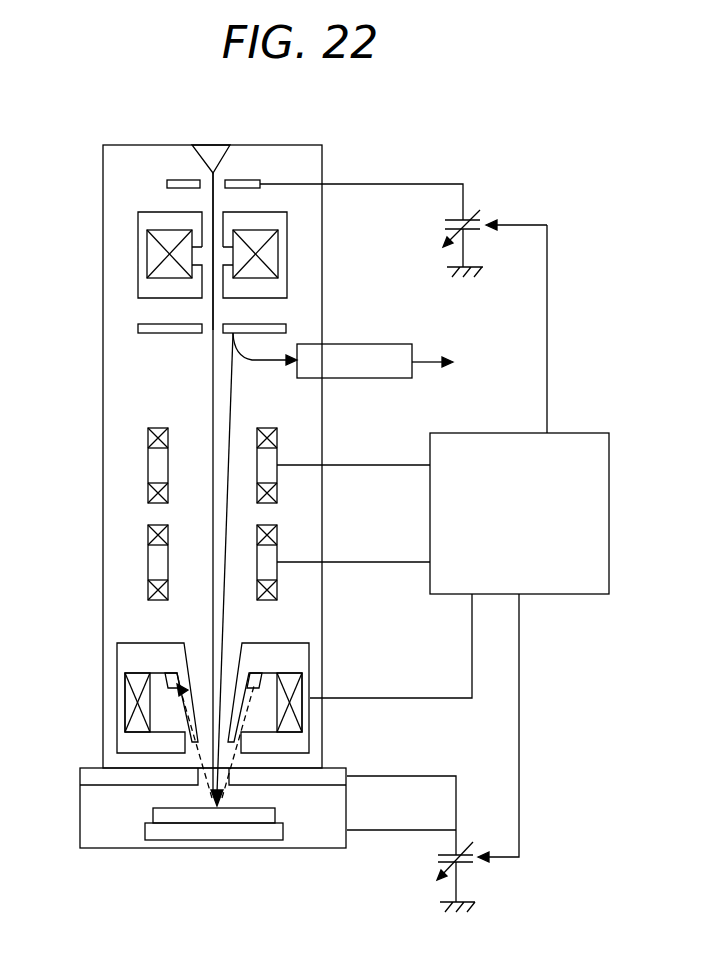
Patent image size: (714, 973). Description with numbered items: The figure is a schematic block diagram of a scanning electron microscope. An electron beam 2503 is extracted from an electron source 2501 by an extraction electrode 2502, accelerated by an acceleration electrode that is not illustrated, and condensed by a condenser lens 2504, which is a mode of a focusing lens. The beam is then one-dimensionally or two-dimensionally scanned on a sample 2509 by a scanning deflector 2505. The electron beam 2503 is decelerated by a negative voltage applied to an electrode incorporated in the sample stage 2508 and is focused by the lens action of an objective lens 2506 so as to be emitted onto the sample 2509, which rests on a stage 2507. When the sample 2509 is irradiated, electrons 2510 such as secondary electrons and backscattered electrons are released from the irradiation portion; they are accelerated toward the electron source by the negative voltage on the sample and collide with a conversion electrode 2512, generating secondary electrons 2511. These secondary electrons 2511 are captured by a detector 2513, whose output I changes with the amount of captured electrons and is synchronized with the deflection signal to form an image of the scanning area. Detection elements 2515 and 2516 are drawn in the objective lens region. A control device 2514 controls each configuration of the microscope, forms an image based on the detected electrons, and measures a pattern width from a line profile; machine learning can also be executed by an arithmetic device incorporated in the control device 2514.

The electron source 2501 is at (197, 160).
The extraction electrode 2502 is at (165, 185).
The electron beam 2503 is at (210, 207).
The condenser lens 2504 is at (138, 255).
The scanning deflector 2505 is at (148, 557).
The objective lens 2506 is at (117, 665).
The stage 2507 is at (207, 848).
The sample stage 2508 is at (265, 840).
The sample 2509 is at (276, 814).
The electrons 2510 is at (228, 388).
The secondary electrons 2511 is at (258, 362).
The conversion electrode 2512 is at (138, 326).
The detector 2513 is at (370, 344).
The control device 2514 is at (609, 520).
The detector 2515 is at (270, 675).
The detector 2516 is at (177, 679).